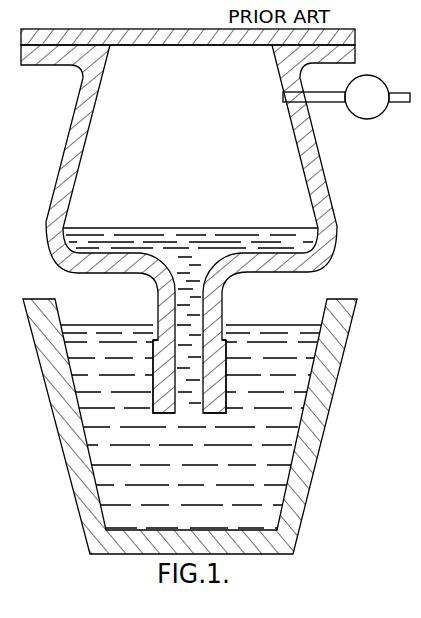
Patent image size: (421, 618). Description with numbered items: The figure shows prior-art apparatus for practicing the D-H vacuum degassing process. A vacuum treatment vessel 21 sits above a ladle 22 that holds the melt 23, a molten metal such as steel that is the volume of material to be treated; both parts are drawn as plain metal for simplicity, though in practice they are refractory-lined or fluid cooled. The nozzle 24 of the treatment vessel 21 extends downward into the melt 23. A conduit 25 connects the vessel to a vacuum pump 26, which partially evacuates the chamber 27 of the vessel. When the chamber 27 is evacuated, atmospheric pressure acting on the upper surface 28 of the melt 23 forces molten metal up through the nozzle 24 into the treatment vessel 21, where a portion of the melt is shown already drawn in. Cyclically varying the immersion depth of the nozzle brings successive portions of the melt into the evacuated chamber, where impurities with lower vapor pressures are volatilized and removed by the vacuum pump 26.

The treatment vessel 21 is at (356, 172).
The ladle 22 is at (369, 398).
The melt 23 is at (270, 497).
The nozzle 24 is at (153, 399).
The conduit 25 is at (331, 103).
The vacuum pump 26 is at (371, 75).
The chamber 27 is at (120, 88).
The upper surface 28 is at (266, 326).